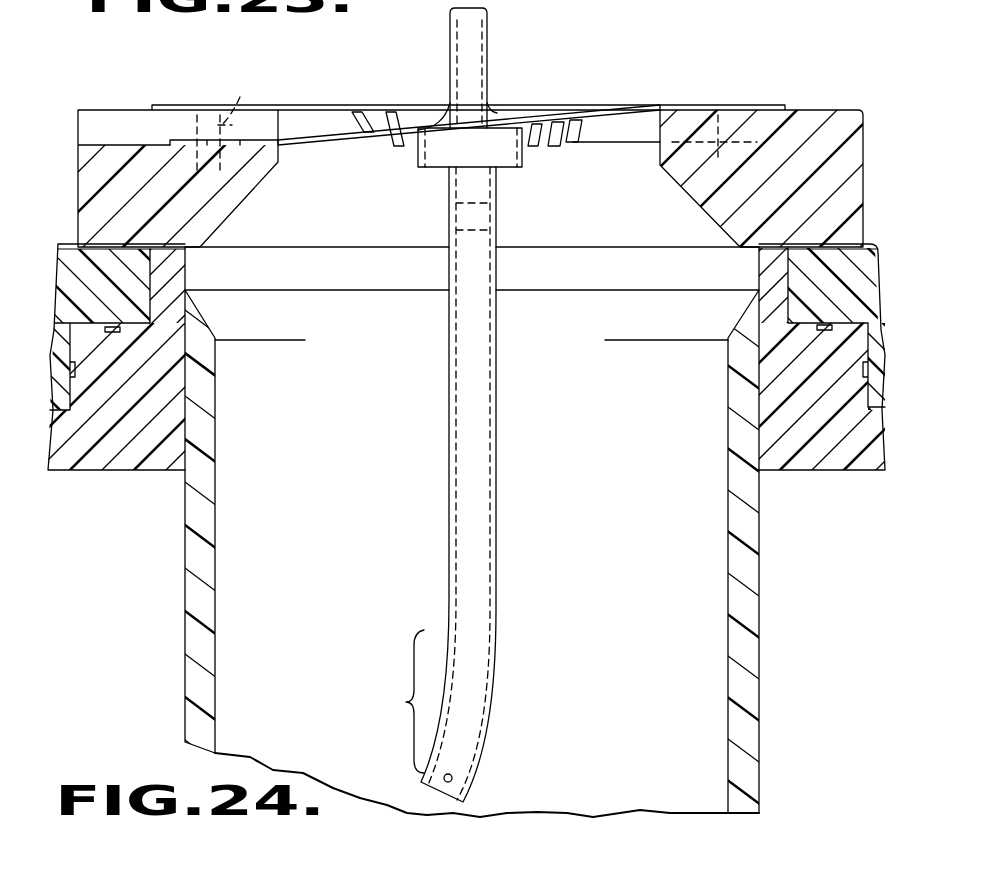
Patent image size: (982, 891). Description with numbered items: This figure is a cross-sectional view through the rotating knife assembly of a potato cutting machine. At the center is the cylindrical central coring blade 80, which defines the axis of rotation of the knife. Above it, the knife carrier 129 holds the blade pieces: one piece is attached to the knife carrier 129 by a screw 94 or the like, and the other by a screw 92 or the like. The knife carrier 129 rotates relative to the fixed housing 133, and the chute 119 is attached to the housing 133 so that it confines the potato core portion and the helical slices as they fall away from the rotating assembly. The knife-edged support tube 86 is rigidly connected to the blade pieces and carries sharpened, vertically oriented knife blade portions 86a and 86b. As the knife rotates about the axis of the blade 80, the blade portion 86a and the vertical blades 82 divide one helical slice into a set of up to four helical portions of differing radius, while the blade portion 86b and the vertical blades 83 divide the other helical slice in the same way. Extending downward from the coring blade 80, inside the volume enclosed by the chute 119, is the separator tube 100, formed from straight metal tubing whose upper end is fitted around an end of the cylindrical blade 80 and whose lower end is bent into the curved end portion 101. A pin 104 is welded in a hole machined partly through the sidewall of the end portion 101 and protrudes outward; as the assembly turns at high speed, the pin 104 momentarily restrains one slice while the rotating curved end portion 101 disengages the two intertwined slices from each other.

The central coring blade 80 is at (487, 43).
The vertical blades 82 is at (408, 103).
The vertical blades 83 is at (573, 143).
The knife-edged support tube 86 is at (432, 170).
The knife blade portion 86a is at (437, 110).
The knife blade portion 86b is at (527, 158).
The screw 92 is at (720, 112).
The screw 94 is at (244, 106).
The separator tube 100 is at (447, 265).
The curved end portion 101 is at (397, 701).
The pin 104 is at (453, 779).
The chute 119 is at (762, 632).
The knife carrier 129 is at (832, 110).
The fixed housing 133 is at (810, 470).